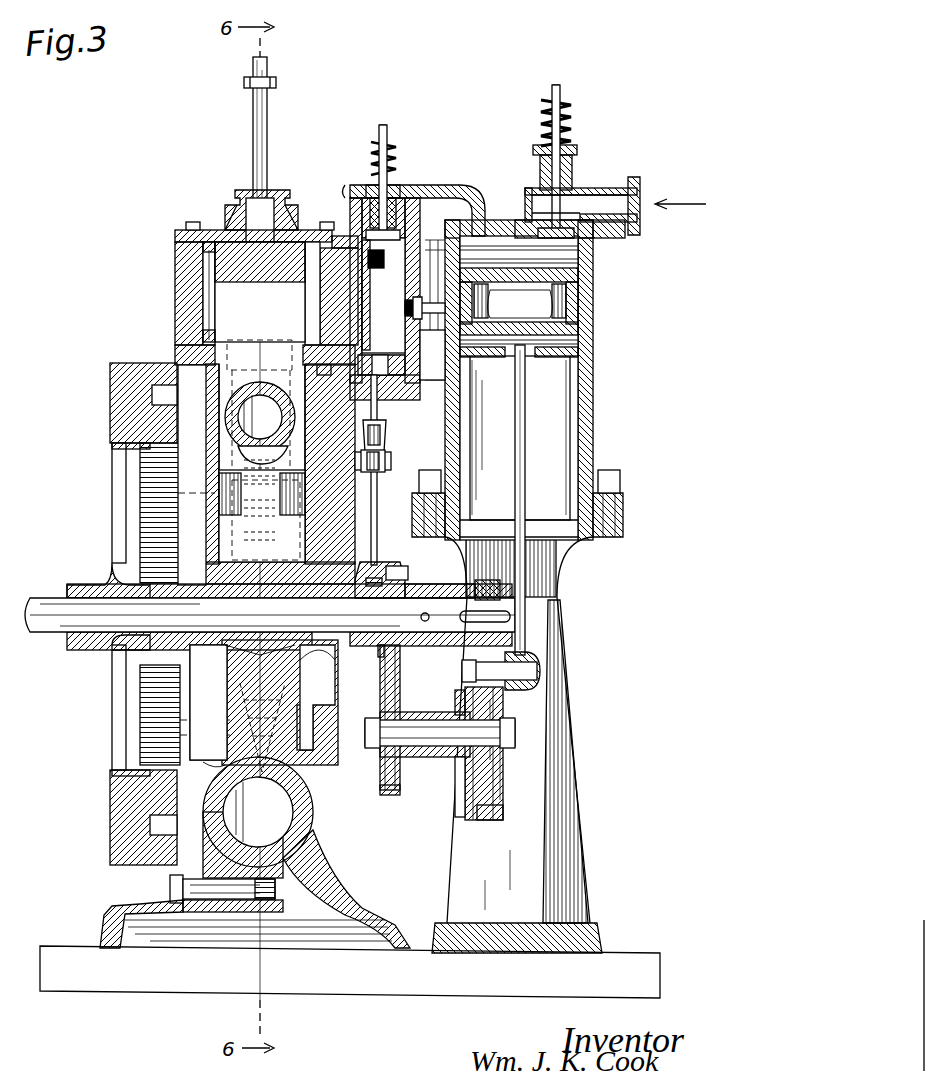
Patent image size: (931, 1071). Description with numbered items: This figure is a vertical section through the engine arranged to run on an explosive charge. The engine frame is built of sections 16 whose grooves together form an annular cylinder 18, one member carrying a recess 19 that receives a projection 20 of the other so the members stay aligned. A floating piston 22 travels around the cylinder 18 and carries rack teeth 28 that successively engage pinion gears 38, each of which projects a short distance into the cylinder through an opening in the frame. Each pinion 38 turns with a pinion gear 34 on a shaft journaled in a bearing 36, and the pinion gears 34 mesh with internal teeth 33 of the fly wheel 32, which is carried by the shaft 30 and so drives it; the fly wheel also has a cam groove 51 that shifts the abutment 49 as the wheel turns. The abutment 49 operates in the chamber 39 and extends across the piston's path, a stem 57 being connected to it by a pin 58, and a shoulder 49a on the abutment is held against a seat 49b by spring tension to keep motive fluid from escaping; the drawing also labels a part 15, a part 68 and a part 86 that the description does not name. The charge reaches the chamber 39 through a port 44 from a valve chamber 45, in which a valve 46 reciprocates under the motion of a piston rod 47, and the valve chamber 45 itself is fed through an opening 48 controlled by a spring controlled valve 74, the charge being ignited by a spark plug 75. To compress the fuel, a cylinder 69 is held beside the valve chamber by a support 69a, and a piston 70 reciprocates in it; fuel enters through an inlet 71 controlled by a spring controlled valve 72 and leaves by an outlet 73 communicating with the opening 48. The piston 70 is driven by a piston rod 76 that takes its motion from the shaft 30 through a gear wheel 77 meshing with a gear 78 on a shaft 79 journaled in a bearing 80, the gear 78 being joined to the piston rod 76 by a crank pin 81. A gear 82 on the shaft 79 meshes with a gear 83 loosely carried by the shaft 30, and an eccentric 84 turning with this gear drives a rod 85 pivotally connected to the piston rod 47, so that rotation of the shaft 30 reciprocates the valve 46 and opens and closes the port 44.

The connecting rod 15 is at (298, 486).
The frame section 16 is at (230, 765).
The annular cylinder 18 is at (290, 832).
The recess 19 is at (290, 652).
The projection 20 is at (236, 650).
The floating piston 22 is at (264, 390).
The rack teeth 28 is at (288, 452).
The shaft 30 is at (55, 633).
The fly wheel 32 is at (122, 824).
The internal teeth 33 is at (150, 447).
The pinion gear 34 is at (150, 490).
The bearing 36 is at (186, 490).
The pinion gear 38 is at (298, 542).
The chamber 39 is at (180, 262).
The port 44 is at (330, 242).
The valve chamber 45 is at (390, 378).
The valve 46 is at (386, 295).
The piston rod 47 is at (381, 440).
The opening 48 is at (405, 236).
The abutment 49 is at (240, 312).
The shoulder 49a is at (210, 242).
The seat 49b is at (206, 335).
The cam groove 51 is at (160, 826).
The stem 57 is at (258, 118).
The pin 58 is at (246, 84).
The stuffing box 68 is at (240, 192).
The cylinder 69 is at (593, 412).
The support 69a is at (565, 795).
The piston 70 is at (583, 311).
The inlet 71 is at (640, 214).
The spring controlled valve 72 is at (566, 228).
The outlet 73 is at (471, 206).
The spring controlled valve 74 is at (376, 230).
The spark plug 75 is at (398, 325).
The piston rod 76 is at (522, 470).
The gear wheel 77 is at (478, 598).
The gear 78 is at (483, 820).
The shaft 79 is at (430, 737).
The bearing 80 is at (462, 712).
The crank pin 81 is at (540, 670).
The gear 82 is at (392, 795).
The gear 83 is at (382, 656).
The eccentric 84 is at (360, 580).
The rod 85 is at (370, 516).
The nut 86 is at (390, 462).